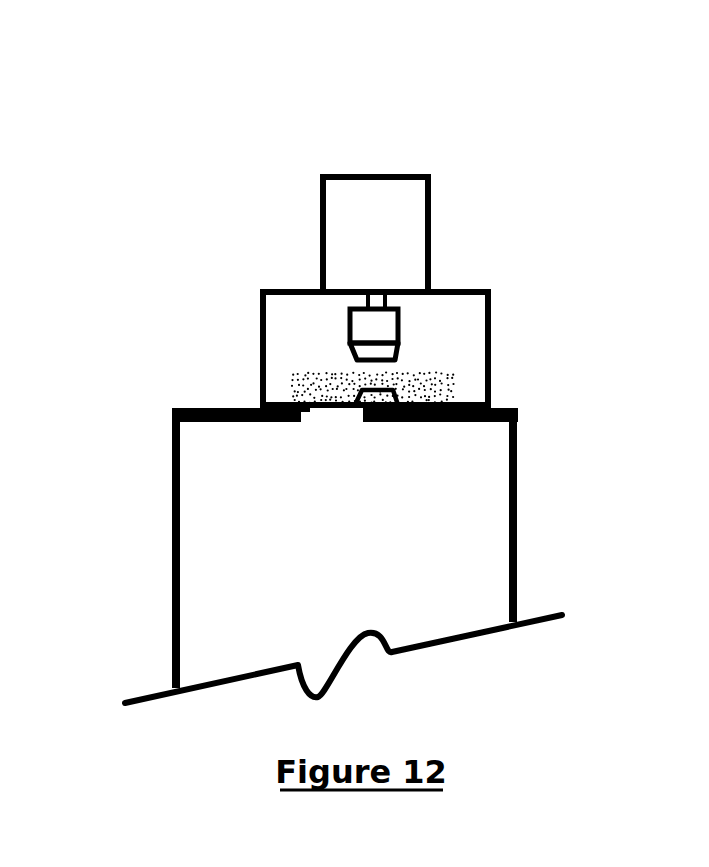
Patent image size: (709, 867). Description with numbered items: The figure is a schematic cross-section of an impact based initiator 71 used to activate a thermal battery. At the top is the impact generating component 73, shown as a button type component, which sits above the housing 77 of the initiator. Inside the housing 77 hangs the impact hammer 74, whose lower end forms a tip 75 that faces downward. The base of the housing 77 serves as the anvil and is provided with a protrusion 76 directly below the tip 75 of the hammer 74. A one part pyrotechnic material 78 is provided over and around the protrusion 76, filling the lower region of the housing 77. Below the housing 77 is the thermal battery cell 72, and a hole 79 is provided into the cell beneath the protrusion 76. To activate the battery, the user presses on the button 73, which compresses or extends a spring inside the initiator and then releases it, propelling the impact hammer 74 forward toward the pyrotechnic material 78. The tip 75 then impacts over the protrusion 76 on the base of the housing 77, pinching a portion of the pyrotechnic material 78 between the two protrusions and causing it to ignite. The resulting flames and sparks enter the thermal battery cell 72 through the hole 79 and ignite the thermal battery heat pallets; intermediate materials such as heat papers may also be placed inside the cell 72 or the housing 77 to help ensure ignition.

The impact based initiator 71 is at (204, 259).
The thermal battery cell 72 is at (153, 540).
The impact generating component 73 is at (434, 158).
The impact hammer 74 is at (327, 326).
The tip 75 is at (412, 349).
The protrusion 76 is at (412, 395).
The housing 77 is at (250, 363).
The pyrotechnic material 78 is at (297, 390).
The hole 79 is at (348, 462).